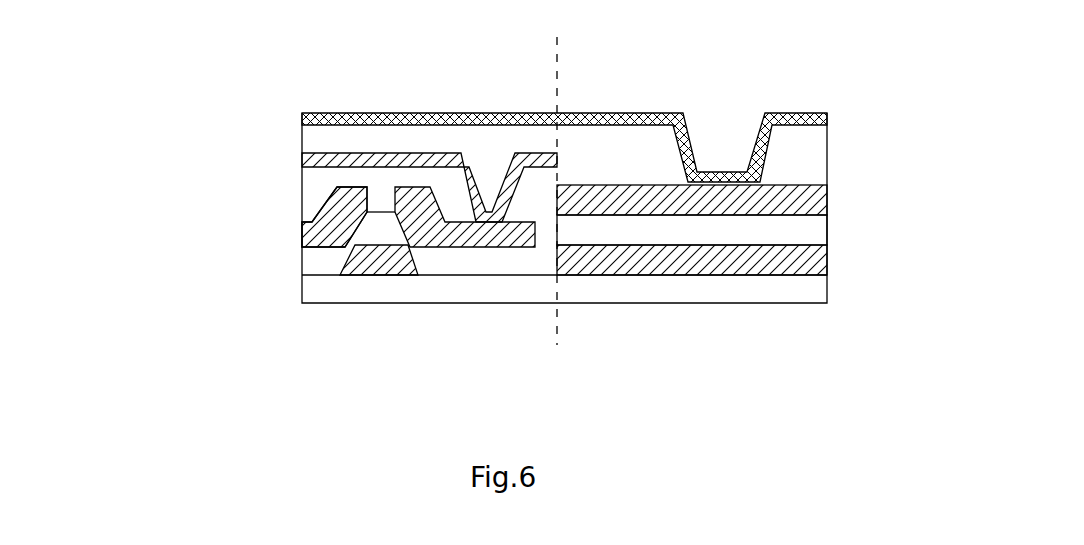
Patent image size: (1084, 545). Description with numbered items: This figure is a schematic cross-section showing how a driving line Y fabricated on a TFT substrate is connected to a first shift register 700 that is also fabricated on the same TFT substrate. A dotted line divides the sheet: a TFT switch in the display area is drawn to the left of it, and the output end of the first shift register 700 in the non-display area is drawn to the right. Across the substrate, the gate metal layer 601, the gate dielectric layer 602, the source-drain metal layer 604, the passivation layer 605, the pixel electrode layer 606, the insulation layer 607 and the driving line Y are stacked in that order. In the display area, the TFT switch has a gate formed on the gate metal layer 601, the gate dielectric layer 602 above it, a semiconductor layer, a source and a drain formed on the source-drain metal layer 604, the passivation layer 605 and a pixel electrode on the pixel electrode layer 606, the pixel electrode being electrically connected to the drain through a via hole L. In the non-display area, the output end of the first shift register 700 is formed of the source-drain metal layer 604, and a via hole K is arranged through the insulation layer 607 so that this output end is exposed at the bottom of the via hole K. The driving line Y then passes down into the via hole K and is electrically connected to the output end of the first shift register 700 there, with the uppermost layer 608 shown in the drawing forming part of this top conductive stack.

The gate metal layer 601 is at (885, 268).
The gate dielectric layer 602 is at (885, 223).
The source-drain metal layer 604 is at (885, 205).
The passivation layer 605 is at (273, 202).
The pixel electrode layer 606 is at (302, 155).
The insulation layer 607 is at (302, 133).
The pixel electrode layer 608 is at (827, 118).
The first shift register 700 is at (722, 322).
The driving line Y is at (257, 77).
The via hole L is at (488, 175).
The via hole K is at (722, 152).